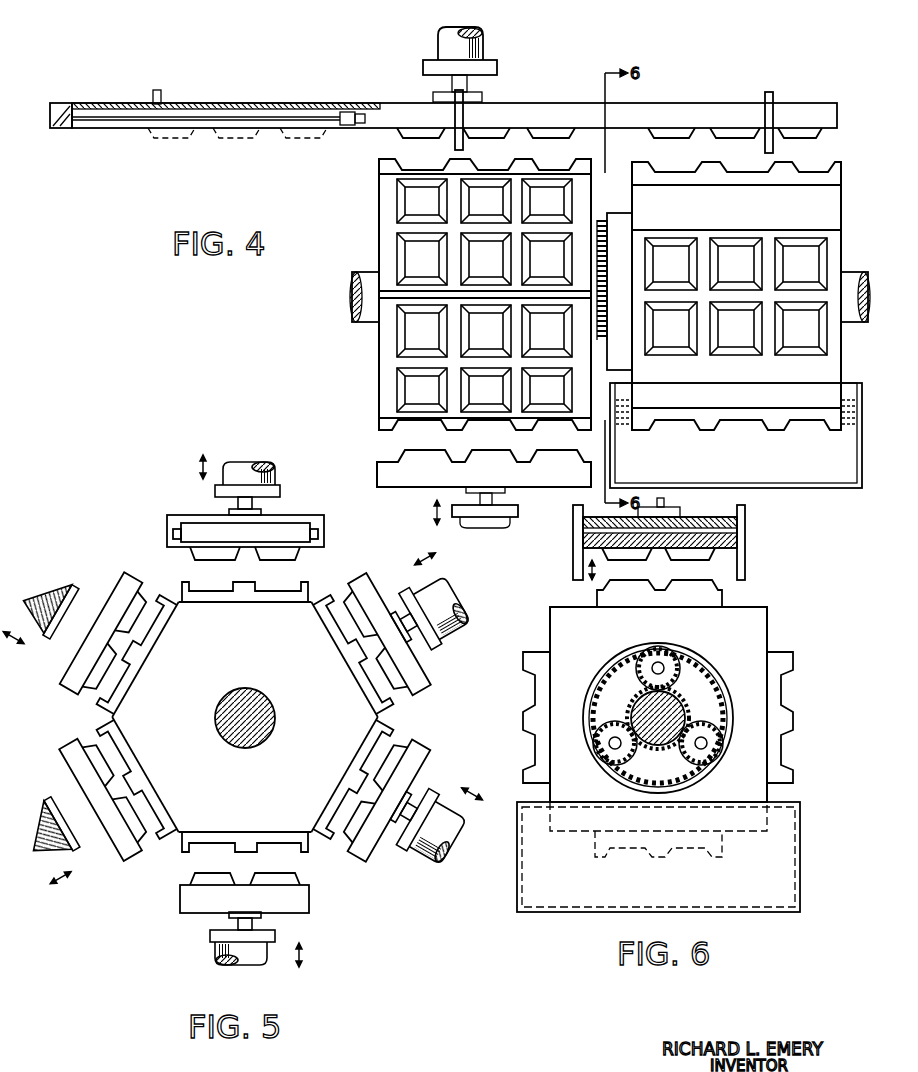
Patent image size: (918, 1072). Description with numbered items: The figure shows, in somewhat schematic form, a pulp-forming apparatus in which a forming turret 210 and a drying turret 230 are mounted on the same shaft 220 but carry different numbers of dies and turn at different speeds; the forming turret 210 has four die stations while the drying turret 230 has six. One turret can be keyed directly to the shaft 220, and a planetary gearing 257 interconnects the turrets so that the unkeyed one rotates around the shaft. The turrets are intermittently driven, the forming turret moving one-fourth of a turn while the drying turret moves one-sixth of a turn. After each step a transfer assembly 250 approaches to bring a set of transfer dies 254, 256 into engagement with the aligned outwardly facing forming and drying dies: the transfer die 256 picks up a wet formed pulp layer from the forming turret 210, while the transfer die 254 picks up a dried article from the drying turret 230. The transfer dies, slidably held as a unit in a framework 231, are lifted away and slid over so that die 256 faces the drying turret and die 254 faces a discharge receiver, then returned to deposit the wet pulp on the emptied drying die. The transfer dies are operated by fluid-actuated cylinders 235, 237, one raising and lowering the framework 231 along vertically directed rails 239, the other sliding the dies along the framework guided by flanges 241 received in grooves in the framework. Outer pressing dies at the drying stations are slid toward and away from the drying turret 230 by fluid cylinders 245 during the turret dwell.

In FIG. 4, the forming turret 210 is at (841, 340).
In FIG. 6, the forming turret 210 is at (767, 627).
In FIG. 4, the shaft 220 is at (354, 295).
In FIG. 5, the shaft 220 is at (232, 698).
In FIG. 6, the shaft 220 is at (650, 708).
In FIG. 4, the drying turret 230 is at (379, 362).
In FIG. 5, the drying turret 230 is at (302, 835).
In FIG. 4, the framework 231 is at (305, 103).
In FIG. 6, the framework 231 is at (718, 515).
In FIG. 4, the fluid-actuated cylinder 235 is at (490, 52).
In FIG. 5, the fluid-actuated cylinder 235 is at (278, 468).
In FIG. 4, the fluid-actuated cylinder 237 is at (58, 103).
In FIG. 4, the vertically directed rails 239 is at (161, 96).
In FIG. 6, the vertically directed rails 239 is at (573, 515).
In FIG. 6, the flanges 241 is at (722, 541).
In FIG. 4, the fluid cylinders 245 is at (466, 530).
In FIG. 5, the fluid cylinders 245 is at (458, 622).
In FIG. 4, the transfer assembly 250 is at (660, 98).
In FIG. 4, the transfer die 254 is at (392, 130).
In FIG. 4, the transfer die 256 is at (822, 136).
In FIG. 6, the transfer die 256 is at (660, 558).
In FIG. 4, the planetary gearing 257 is at (600, 218).
In FIG. 6, the planetary gearing 257 is at (690, 668).